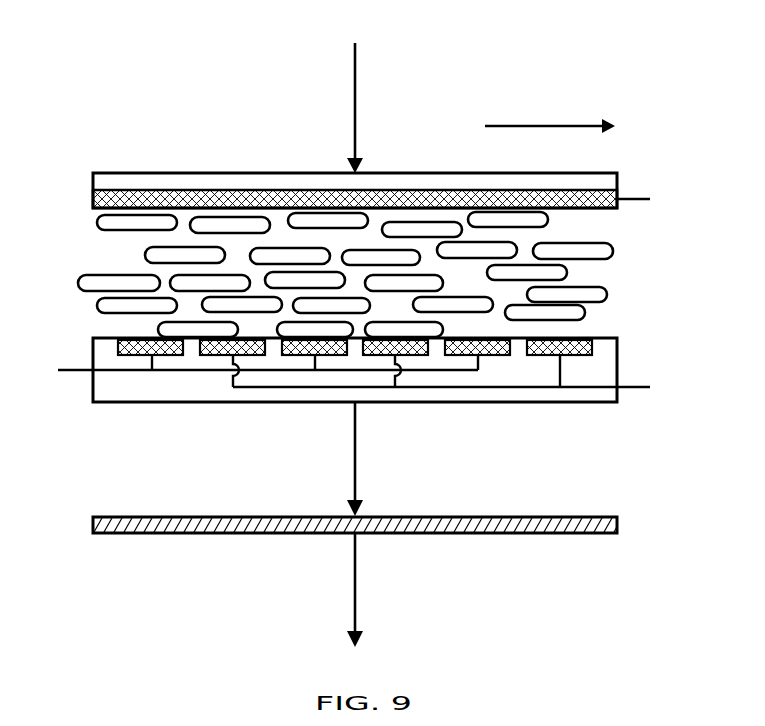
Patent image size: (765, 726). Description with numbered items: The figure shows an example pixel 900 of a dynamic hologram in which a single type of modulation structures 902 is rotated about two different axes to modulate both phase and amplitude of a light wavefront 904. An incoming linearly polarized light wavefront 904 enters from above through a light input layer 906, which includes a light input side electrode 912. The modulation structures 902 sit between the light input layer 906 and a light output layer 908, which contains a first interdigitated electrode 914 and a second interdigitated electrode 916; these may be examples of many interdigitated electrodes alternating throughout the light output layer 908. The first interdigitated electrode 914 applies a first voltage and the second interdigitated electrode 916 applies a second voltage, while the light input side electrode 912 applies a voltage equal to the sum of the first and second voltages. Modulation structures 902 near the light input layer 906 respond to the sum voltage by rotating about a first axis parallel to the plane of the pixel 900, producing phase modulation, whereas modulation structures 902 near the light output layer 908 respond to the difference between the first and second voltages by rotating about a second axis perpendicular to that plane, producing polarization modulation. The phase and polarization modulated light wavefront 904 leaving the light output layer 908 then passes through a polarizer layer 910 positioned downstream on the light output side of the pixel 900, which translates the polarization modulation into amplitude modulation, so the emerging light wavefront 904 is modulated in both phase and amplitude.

The pixel 900 is at (649, 37).
The modulation structures 902 is at (607, 297).
The light wavefront 904 is at (355, 101).
The light input layer 906 is at (602, 173).
The light output layer 908 is at (617, 355).
The polarizer layer 910 is at (617, 522).
The light input side electrode 912 is at (93, 193).
The first interdigitated electrode 914 is at (138, 388).
The second interdigitated electrode 916 is at (593, 326).